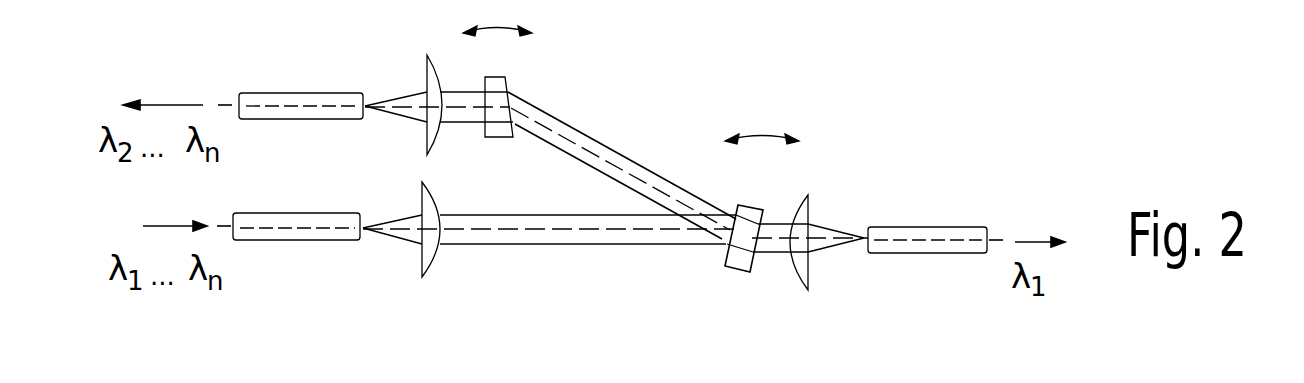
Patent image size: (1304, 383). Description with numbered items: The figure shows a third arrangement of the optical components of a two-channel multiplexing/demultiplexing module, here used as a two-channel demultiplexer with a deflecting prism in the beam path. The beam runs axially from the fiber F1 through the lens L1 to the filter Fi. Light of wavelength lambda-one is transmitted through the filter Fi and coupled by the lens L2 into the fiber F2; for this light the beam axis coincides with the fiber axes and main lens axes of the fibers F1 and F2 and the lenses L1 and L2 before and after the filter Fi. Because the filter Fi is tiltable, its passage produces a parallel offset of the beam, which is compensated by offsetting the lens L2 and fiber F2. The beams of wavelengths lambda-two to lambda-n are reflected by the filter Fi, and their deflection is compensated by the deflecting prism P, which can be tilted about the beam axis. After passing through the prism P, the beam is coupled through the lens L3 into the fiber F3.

The fiber F1 is at (296, 202).
The fiber F2 is at (927, 215).
The fiber F3 is at (301, 81).
The lens L1 is at (549, 259).
The lens L2 is at (810, 267).
The lens L3 is at (448, 79).
The deflecting prism P is at (610, 146).
The filter Fi is at (762, 203).